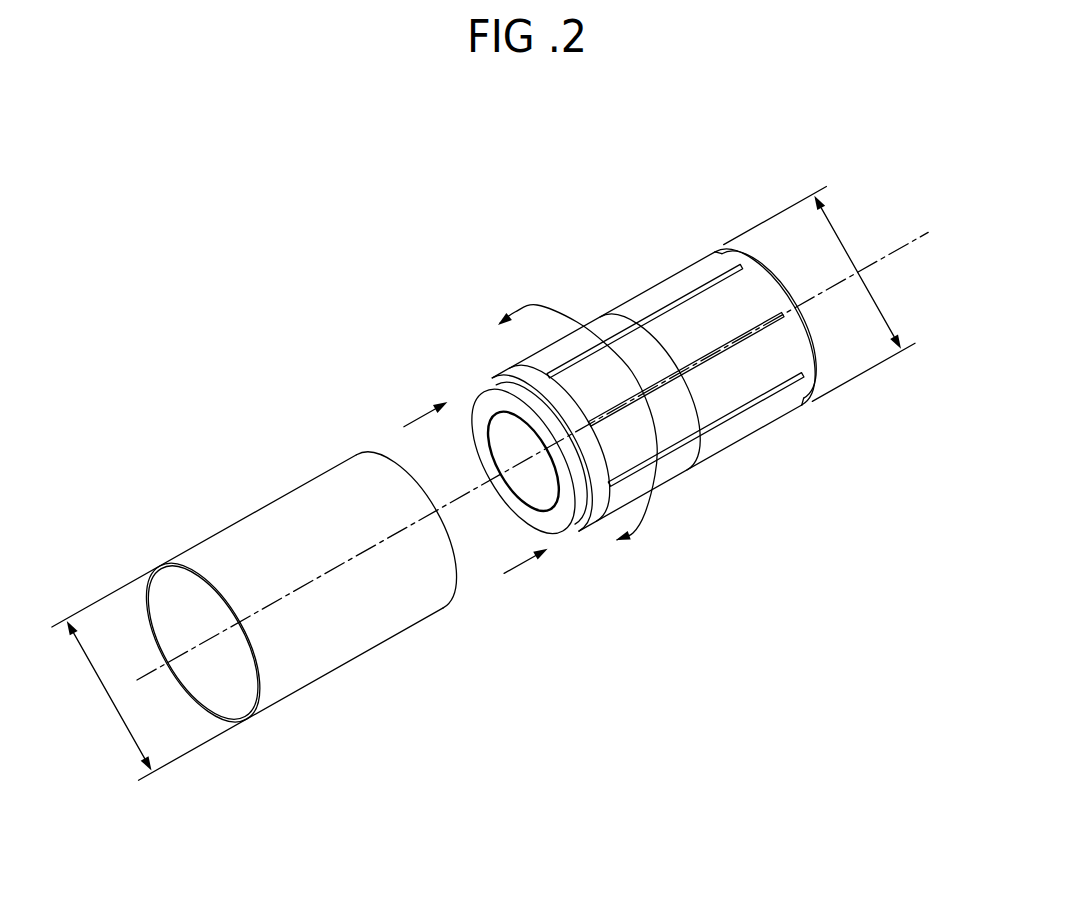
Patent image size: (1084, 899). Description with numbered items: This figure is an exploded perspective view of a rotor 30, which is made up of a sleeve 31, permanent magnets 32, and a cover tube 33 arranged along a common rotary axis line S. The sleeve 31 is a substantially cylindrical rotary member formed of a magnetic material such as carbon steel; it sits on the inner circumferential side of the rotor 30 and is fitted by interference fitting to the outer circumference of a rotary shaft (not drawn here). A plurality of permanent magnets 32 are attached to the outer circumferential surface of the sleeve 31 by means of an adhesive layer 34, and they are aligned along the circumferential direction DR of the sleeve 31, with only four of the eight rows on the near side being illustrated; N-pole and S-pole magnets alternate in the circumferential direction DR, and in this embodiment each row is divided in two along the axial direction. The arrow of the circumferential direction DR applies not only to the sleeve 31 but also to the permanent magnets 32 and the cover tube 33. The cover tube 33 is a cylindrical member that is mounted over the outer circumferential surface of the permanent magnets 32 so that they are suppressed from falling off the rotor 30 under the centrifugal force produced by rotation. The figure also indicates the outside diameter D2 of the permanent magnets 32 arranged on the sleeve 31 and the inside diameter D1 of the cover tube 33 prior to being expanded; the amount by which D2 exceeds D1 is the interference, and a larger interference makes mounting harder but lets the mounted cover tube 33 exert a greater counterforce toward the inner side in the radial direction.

The rotor 30 is at (676, 363).
The sleeve 31 is at (813, 372).
The permanent magnets 32 is at (723, 445).
The cover tube 33 is at (330, 638).
The adhesive layer 34 is at (573, 523).
The rotary axis line S is at (901, 236).
The circumferential direction DR is at (557, 308).
The inside diameter of the cover tube D1 is at (109, 696).
The outside diameter of the permanent magnets D2 is at (819, 294).